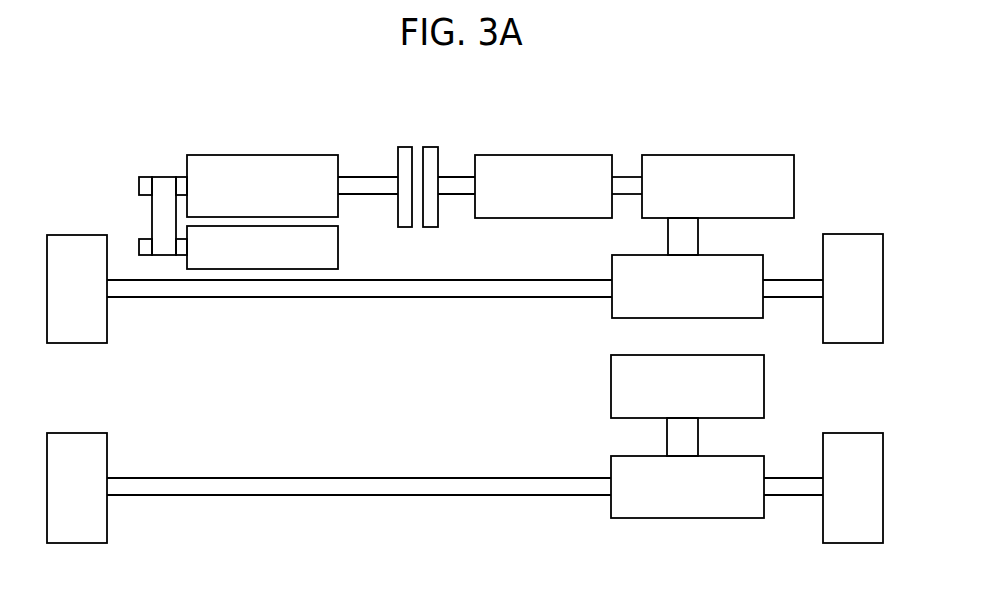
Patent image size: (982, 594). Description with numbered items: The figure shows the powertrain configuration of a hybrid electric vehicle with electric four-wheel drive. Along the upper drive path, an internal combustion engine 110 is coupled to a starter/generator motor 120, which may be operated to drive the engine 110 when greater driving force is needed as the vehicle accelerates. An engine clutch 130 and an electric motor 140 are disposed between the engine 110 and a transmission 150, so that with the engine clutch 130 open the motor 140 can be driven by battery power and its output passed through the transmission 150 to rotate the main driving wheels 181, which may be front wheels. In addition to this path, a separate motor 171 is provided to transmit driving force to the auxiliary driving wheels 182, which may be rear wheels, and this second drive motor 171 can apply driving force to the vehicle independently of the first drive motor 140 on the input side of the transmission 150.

The internal combustion engine 110 is at (262, 155).
The starter/generator motor 120 is at (338, 246).
The engine clutch 130 is at (404, 147).
The electric motor 140 is at (542, 155).
The transmission 150 is at (716, 155).
The separate motor 171 is at (611, 386).
The main driving wheels 181 is at (75, 235).
The auxiliary driving wheels 182 is at (75, 433).